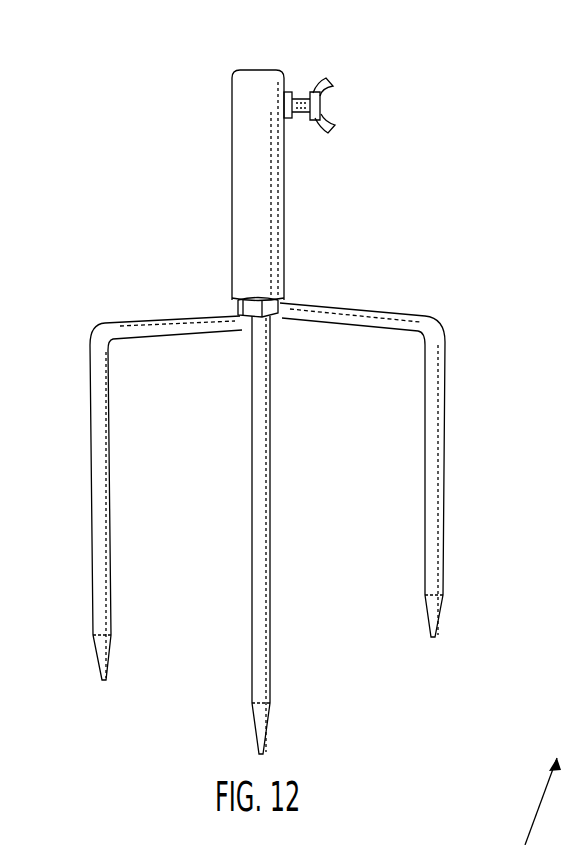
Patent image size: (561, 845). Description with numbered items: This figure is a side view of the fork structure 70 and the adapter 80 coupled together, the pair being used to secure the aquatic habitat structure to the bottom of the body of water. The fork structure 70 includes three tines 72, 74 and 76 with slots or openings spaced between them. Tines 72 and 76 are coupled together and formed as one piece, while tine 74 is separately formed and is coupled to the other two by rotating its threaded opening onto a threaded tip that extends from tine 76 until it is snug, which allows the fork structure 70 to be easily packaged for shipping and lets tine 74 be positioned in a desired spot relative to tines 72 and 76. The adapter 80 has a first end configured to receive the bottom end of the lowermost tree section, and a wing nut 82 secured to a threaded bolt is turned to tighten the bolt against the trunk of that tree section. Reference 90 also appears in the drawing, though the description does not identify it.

The fork structure 70 is at (130, 295).
The tine 72 is at (97, 415).
The tine 74 is at (435, 403).
The tine 76 is at (263, 687).
The adapter 80 is at (251, 90).
The wing nut 82 is at (332, 86).
The pole / post 90 is at (553, 815).